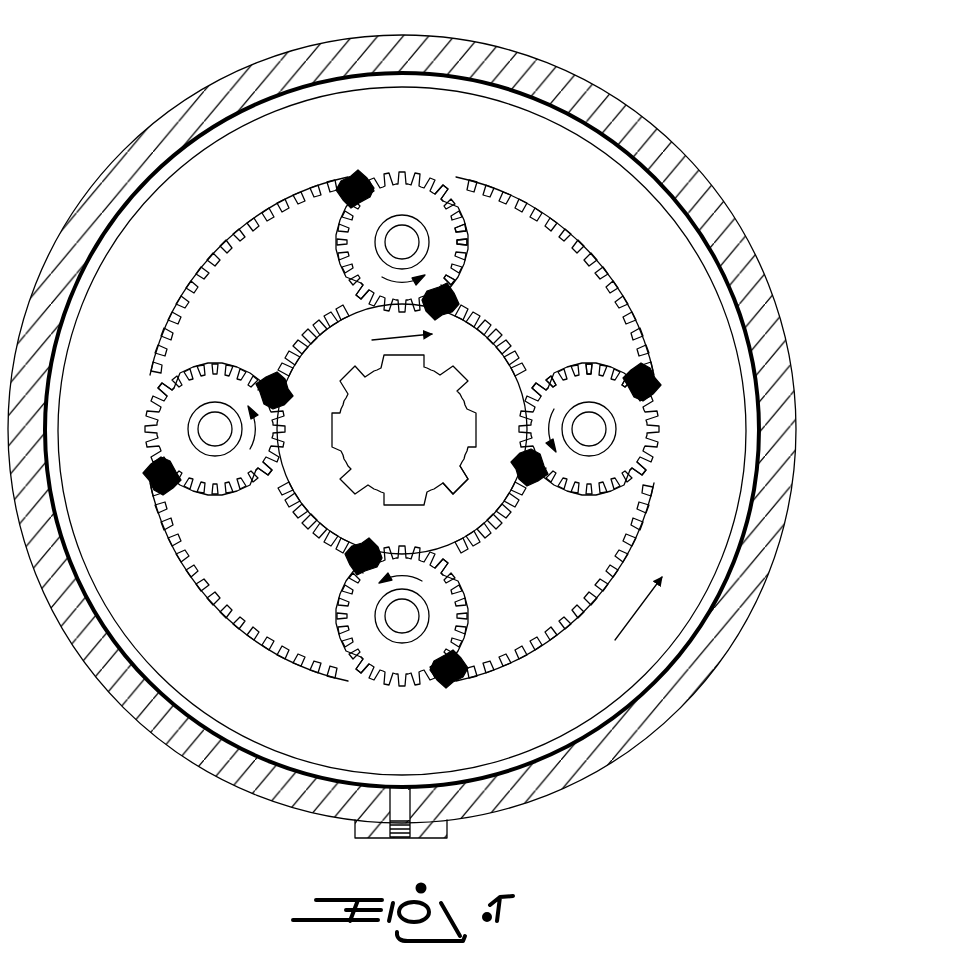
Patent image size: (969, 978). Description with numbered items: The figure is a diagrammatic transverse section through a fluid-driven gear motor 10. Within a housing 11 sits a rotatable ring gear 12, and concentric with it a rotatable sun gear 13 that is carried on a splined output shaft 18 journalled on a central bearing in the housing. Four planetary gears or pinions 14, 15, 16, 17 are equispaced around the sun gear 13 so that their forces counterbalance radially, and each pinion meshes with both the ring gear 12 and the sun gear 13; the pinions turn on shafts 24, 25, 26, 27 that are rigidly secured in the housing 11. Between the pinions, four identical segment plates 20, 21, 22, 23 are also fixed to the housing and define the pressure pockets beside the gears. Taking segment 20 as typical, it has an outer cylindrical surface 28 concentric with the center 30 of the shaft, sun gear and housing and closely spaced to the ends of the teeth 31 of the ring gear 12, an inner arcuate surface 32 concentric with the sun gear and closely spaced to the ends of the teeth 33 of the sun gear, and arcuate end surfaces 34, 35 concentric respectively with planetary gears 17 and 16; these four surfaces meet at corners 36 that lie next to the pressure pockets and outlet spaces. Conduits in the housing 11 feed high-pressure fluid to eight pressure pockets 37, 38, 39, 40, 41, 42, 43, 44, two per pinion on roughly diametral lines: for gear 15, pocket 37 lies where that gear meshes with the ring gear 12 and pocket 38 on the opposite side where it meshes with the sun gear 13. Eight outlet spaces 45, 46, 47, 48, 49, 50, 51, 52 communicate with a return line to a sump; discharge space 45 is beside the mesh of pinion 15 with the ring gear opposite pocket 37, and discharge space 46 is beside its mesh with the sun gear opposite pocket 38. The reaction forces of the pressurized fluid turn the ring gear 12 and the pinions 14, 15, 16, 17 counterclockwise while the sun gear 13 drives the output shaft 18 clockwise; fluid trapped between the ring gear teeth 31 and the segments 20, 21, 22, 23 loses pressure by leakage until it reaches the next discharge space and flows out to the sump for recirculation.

The gear motor 10 is at (568, 72).
The housing 11 is at (668, 162).
The ring gear 12 is at (417, 431).
The sun gear 13 is at (402, 429).
The planetary gear 14 is at (194, 428).
The planetary gear 15 is at (390, 630).
The planetary gear 16 is at (591, 423).
The planetary gear 17 is at (401, 248).
The output shaft 18 is at (420, 470).
The segment plate 20 is at (555, 276).
The segment plate 21 is at (249, 276).
The segment plate 22 is at (249, 582).
The segment plate 23 is at (555, 582).
The shaft 24 is at (404, 243).
The shaft 25 is at (216, 428).
The shaft 26 is at (412, 628).
The shaft 27 is at (588, 440).
The outer cylindrical surface 28 is at (612, 298).
The center 30 is at (404, 438).
The teeth of ring gear 31 is at (582, 242).
The inner arcuate surface 32 is at (502, 348).
The teeth of sun gear 33 is at (506, 360).
The arcuate end surface 34 is at (470, 250).
The arcuate end surface 35 is at (585, 362).
The corners 36 is at (462, 233).
The pressure pocket 37 is at (452, 684).
The pressure pocket 38 is at (360, 556).
The pressure pocket 39 is at (528, 472).
The pressure pocket 40 is at (645, 383).
The pressure pocket 41 is at (435, 305).
The pressure pocket 42 is at (356, 186).
The pressure pocket 43 is at (272, 383).
The pressure pocket 44 is at (158, 478).
The discharge space 45 is at (350, 676).
The discharge space 46 is at (442, 562).
The outlet space 47 is at (640, 470).
The outlet space 48 is at (520, 395).
The outlet space 49 is at (455, 192).
The outlet space 50 is at (352, 300).
The outlet space 51 is at (160, 380).
The outlet space 52 is at (268, 480).